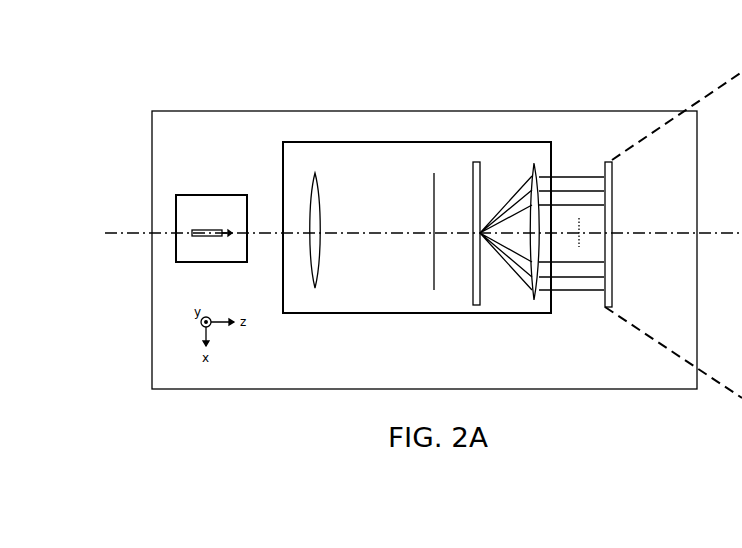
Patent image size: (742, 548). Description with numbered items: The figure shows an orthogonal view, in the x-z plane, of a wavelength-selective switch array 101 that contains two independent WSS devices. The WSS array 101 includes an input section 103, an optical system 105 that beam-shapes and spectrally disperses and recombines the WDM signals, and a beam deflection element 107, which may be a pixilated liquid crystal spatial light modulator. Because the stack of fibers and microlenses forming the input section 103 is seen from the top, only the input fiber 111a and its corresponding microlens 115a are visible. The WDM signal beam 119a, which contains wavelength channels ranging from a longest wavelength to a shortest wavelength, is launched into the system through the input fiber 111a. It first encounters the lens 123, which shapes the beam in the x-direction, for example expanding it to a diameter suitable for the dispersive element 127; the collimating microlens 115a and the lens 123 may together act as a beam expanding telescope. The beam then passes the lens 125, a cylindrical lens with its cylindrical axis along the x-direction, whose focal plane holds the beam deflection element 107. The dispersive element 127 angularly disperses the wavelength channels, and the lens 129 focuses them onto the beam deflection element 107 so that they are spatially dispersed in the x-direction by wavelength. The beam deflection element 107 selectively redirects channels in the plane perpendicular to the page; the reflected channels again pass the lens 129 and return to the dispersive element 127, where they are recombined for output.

The WSS array 101 is at (493, 111).
The input section 103 is at (176, 226).
The optical system 105 is at (363, 142).
The beam deflection element 107 is at (612, 190).
The input fiber 111a is at (198, 230).
The microlens 115a is at (231, 230).
The WDM signal beam 119a is at (265, 237).
The lens 123 is at (316, 288).
The lens 125 is at (433, 290).
The dispersive element 127 is at (473, 296).
The lens 129 is at (536, 299).